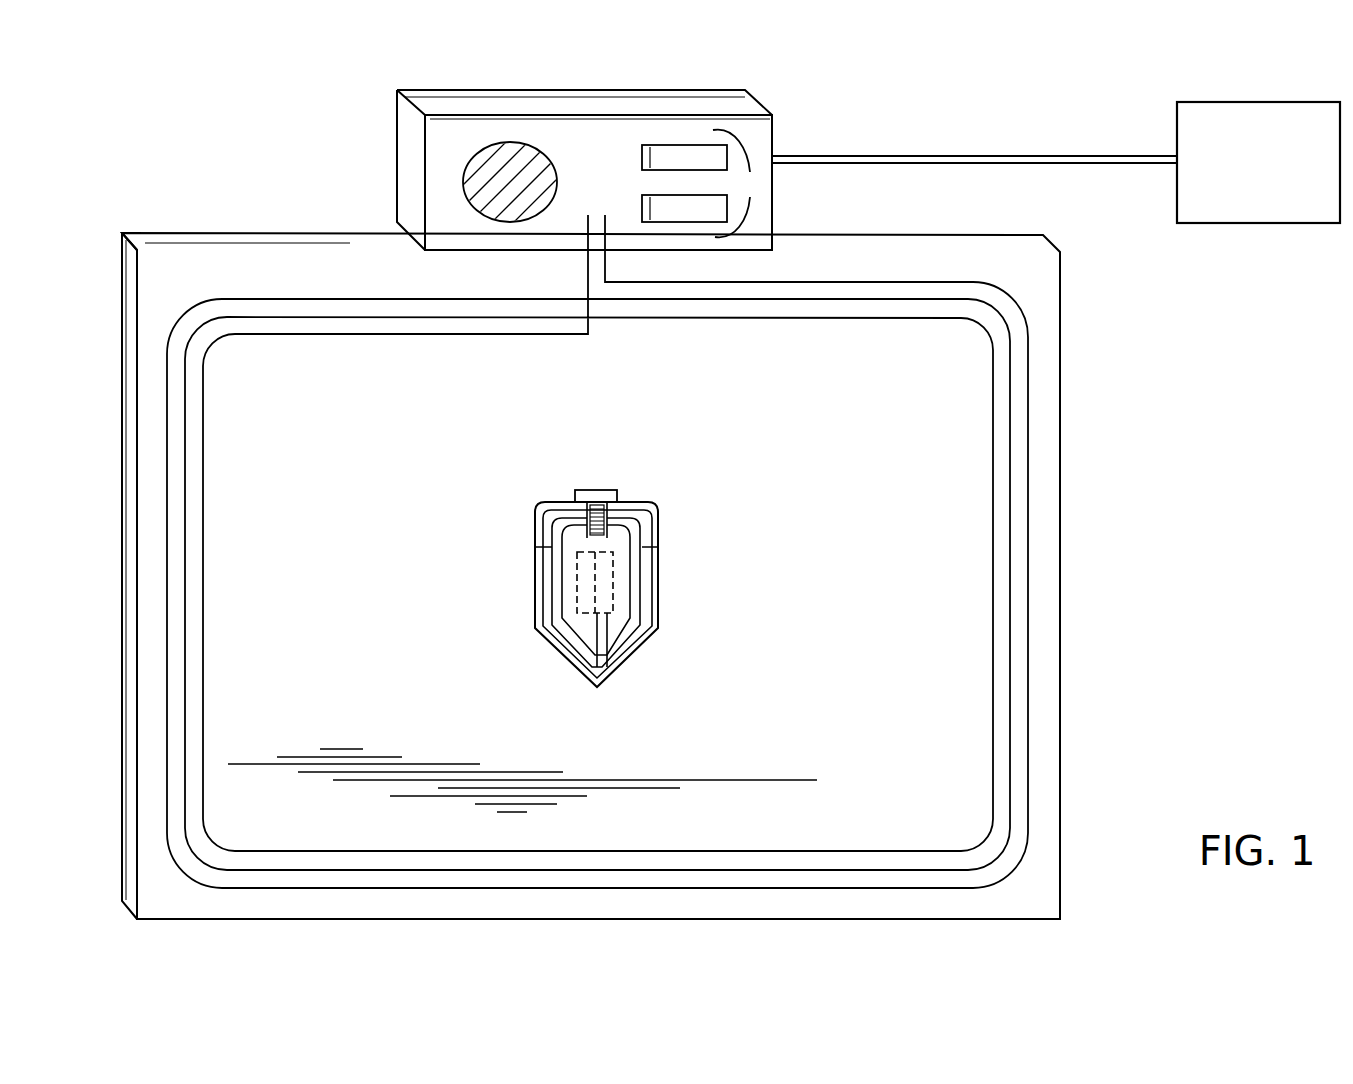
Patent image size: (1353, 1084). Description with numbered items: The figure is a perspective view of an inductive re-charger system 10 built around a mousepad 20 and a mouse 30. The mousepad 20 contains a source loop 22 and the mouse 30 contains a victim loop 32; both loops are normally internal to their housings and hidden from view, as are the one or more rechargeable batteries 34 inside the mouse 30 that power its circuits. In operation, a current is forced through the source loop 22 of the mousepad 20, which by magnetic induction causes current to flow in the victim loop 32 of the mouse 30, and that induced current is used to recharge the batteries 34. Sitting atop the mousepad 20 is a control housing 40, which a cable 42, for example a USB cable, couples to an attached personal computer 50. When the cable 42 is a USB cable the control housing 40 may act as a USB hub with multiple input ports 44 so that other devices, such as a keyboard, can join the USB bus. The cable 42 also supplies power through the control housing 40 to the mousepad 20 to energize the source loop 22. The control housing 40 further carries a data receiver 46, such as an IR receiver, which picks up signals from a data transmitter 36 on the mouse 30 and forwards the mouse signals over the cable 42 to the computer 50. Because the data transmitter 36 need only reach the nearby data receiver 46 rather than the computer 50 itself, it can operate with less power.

The inductive re-charger system 10 is at (156, 136).
The mousepad 20 is at (870, 790).
The source loop 22 is at (674, 305).
The mouse 30 is at (623, 577).
The victim loop 32 is at (643, 613).
The rechargeable batteries 34 is at (580, 593).
The data transmitter 36 is at (607, 490).
The control housing 40 is at (601, 114).
The cable 42 is at (877, 155).
The input ports 44 is at (702, 184).
The data receiver 46 is at (500, 167).
The personal computer 50 is at (1243, 201).